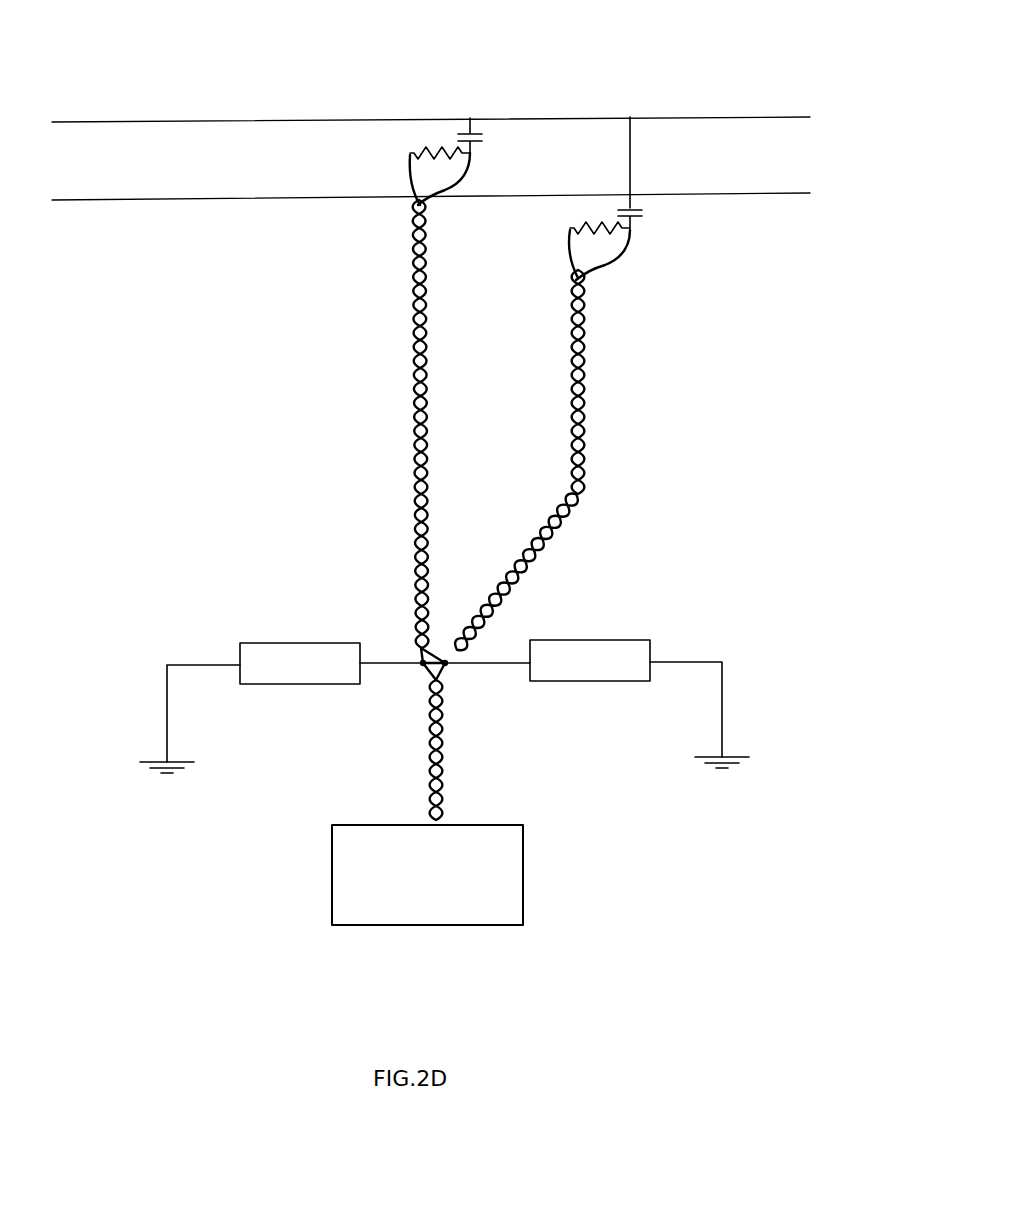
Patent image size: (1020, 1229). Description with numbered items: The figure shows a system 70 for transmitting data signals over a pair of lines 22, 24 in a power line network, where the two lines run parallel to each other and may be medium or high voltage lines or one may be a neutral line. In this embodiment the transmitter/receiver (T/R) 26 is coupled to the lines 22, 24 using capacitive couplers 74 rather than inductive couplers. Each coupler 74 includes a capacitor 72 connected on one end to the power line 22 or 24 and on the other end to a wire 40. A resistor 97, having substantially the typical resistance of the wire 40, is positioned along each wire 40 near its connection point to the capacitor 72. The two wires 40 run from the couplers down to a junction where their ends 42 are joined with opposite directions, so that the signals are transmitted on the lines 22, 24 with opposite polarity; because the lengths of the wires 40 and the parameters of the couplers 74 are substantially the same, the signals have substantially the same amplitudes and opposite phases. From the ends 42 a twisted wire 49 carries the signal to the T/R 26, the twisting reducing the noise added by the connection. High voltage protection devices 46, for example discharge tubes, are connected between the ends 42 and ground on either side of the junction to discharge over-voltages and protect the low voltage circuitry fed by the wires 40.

The line 22 is at (88, 122).
The line 24 is at (92, 200).
The transmitter/receiver (T/R) 26 is at (525, 876).
The transformer wire 40 is at (430, 352).
The ends of transformer wire 42 is at (425, 665).
The high voltage protection device 46 is at (283, 643).
The twisted wire 49 is at (442, 738).
The system 70 is at (228, 412).
The capacitor 72 is at (458, 137).
The capacitive coupler 74 is at (366, 98).
The resistor 97 is at (437, 152).